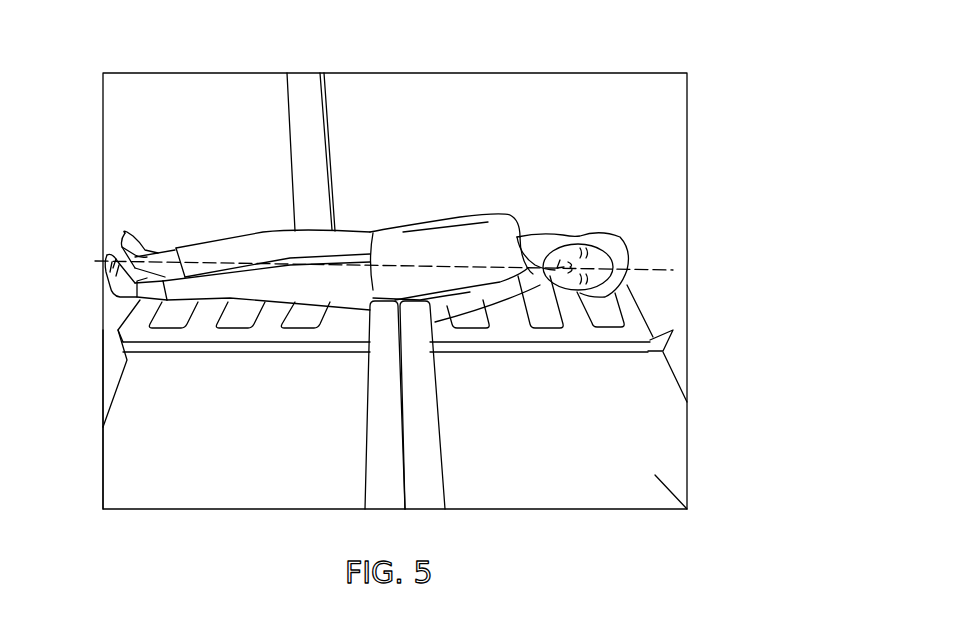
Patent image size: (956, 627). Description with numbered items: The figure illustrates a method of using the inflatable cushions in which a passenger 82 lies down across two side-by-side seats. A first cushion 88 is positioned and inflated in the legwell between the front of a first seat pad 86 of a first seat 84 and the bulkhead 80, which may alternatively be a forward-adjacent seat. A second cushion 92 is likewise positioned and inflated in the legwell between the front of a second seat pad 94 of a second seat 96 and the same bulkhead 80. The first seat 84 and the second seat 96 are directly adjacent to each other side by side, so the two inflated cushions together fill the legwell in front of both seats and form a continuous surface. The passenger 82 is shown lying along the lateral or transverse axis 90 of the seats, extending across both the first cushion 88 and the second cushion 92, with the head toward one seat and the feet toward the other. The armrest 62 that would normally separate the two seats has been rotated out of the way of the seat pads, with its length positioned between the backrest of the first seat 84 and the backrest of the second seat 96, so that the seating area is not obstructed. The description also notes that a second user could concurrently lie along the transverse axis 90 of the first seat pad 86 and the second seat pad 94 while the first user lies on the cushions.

The armrest 62 is at (385, 465).
The bulkhead 80 is at (559, 130).
The passenger 82 is at (264, 242).
The first seat 84 is at (135, 465).
The first seat pad 86 is at (163, 443).
The first cushion 88 is at (137, 280).
The transverse axis 90 is at (668, 270).
The second cushion 92 is at (638, 325).
The second seat pad 94 is at (650, 437).
The second seat 96 is at (655, 475).